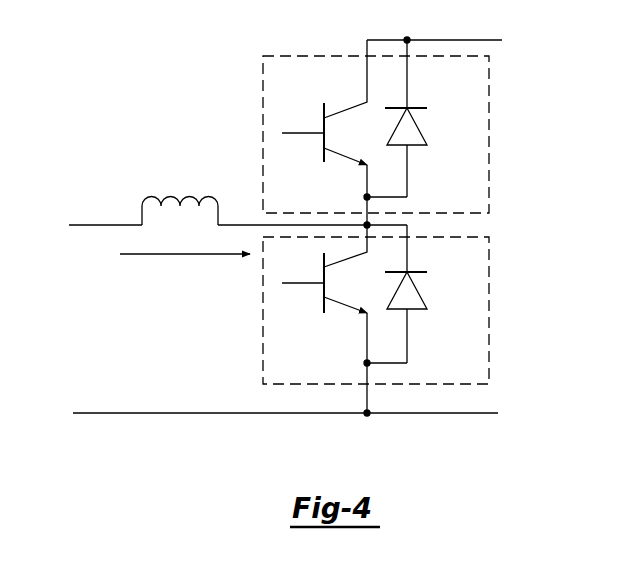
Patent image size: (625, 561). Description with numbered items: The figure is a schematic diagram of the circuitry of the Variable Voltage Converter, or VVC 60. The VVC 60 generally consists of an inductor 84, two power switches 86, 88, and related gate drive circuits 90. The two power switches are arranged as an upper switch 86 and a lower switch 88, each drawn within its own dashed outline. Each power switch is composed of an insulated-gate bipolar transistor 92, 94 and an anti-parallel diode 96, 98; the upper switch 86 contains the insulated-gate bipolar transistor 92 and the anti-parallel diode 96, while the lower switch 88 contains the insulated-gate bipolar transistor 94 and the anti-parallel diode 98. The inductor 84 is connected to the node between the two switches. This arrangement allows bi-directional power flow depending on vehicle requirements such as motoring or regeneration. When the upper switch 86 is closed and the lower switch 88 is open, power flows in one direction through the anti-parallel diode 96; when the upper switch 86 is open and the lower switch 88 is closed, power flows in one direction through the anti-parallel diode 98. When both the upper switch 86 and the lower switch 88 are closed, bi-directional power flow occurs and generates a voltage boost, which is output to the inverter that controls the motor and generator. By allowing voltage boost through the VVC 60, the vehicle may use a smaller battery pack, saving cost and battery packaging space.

The variable voltage converter 60 is at (108, 71).
The inductor 84 is at (142, 219).
The upper switch 86 is at (489, 133).
The lower switch 88 is at (489, 310).
The gate drive circuits 90 is at (407, 176).
The insulated-gate bipolar transistor 92 is at (324, 112).
The insulated-gate bipolar transistor 94 is at (324, 305).
The anti-parallel diode 96 is at (427, 107).
The anti-parallel diode 98 is at (427, 271).